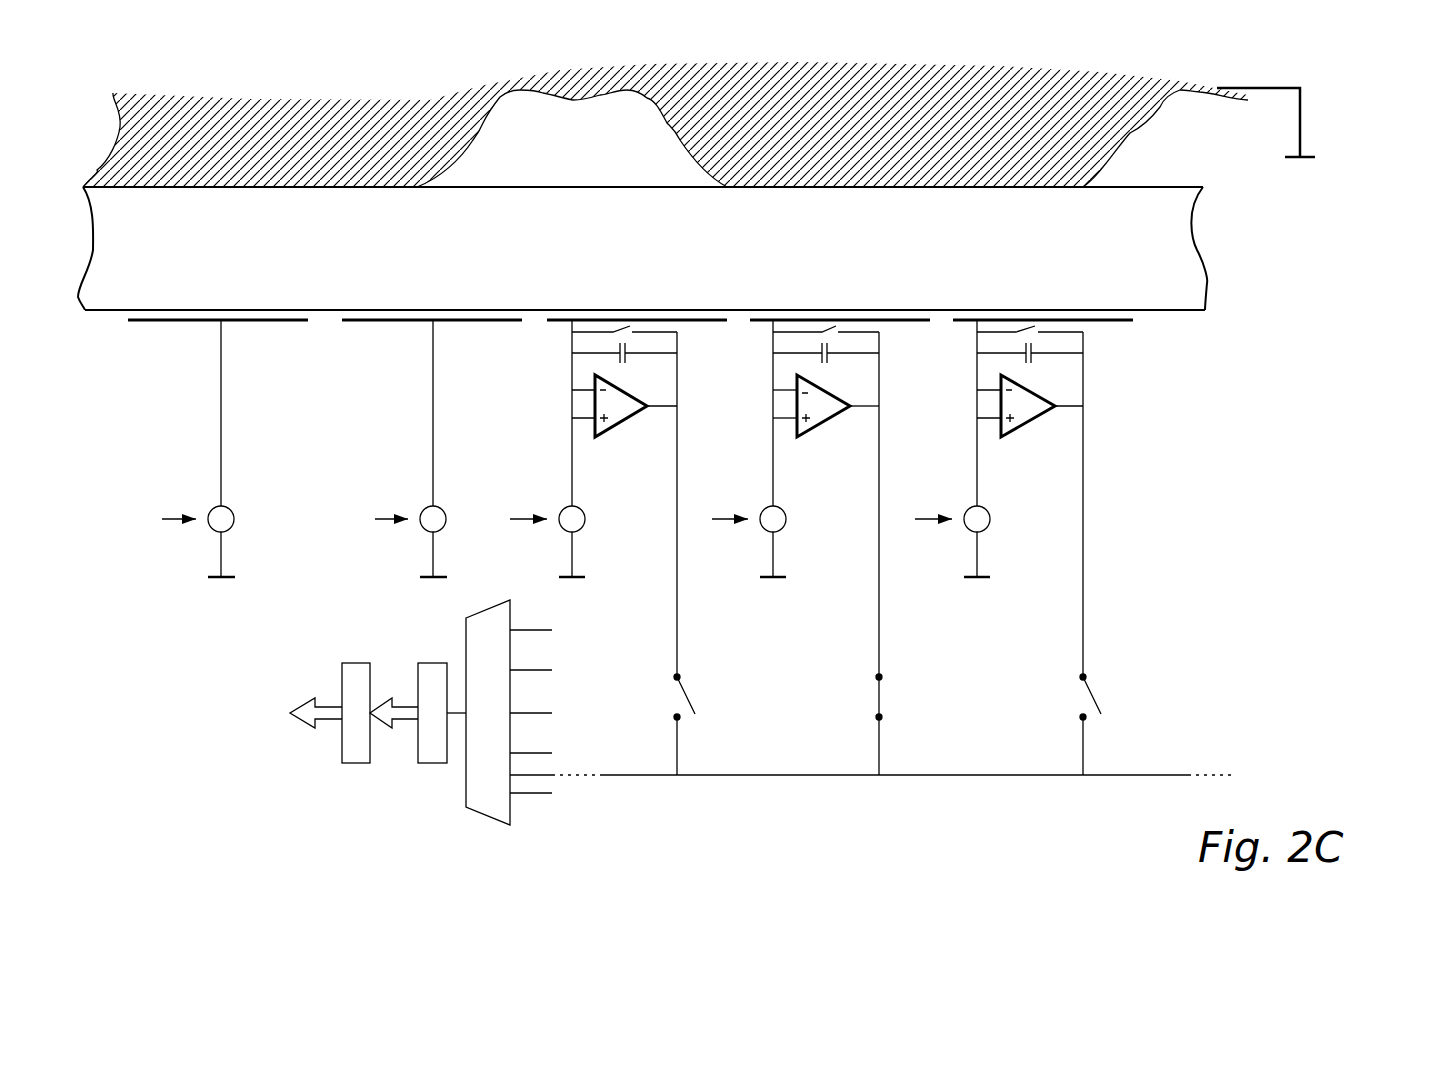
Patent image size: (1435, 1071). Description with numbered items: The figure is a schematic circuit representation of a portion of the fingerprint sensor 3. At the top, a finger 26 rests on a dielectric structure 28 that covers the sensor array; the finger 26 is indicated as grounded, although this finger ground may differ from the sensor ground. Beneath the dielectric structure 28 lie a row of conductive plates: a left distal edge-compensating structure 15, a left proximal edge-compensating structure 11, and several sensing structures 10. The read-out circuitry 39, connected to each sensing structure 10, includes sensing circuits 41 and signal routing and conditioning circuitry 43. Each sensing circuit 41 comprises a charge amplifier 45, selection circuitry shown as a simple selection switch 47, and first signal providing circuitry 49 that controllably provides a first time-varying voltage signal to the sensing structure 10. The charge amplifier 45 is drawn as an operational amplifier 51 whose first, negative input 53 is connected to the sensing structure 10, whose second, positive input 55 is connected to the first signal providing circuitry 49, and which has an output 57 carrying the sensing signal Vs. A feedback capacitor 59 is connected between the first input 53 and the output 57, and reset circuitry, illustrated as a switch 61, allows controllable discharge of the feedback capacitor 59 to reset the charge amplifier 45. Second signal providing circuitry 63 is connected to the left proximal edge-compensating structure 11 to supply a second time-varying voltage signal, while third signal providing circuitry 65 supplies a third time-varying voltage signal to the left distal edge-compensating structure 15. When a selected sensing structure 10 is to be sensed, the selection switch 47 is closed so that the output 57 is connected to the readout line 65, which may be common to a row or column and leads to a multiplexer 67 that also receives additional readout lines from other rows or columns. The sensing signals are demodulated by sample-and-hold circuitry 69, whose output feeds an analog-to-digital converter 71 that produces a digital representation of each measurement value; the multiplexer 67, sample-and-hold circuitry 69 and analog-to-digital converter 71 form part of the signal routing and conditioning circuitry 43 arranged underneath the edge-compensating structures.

The fingerprint sensor 3 is at (1310, 204).
The sensing structure 10 is at (915, 322).
The left proximal edge-compensating structure 11 is at (385, 322).
The left distal edge-compensating structure 15 is at (162, 322).
The finger 26 is at (909, 125).
The dielectric structure 28 is at (1175, 267).
The read-out circuitry 39 is at (1260, 387).
The sensing circuit 41 is at (779, 748).
The signal routing and conditioning circuitry 43 is at (421, 748).
The charge amplifier 45 is at (824, 496).
The selection switch 47 is at (869, 695).
The first signal providing circuitry 49 is at (783, 528).
The operational amplifier 51 is at (825, 385).
The first input 53 is at (797, 399).
The second input 55 is at (798, 425).
The output 57 is at (852, 408).
The feedback capacitor 59 is at (845, 344).
The reset switch 61 is at (830, 330).
The second signal providing circuitry 63 is at (446, 519).
The readout line 65 is at (234, 519).
The multiplexer 67 is at (466, 633).
The sample-and-hold circuitry 69 is at (430, 763).
The analog-to-digital converter 71 is at (355, 763).